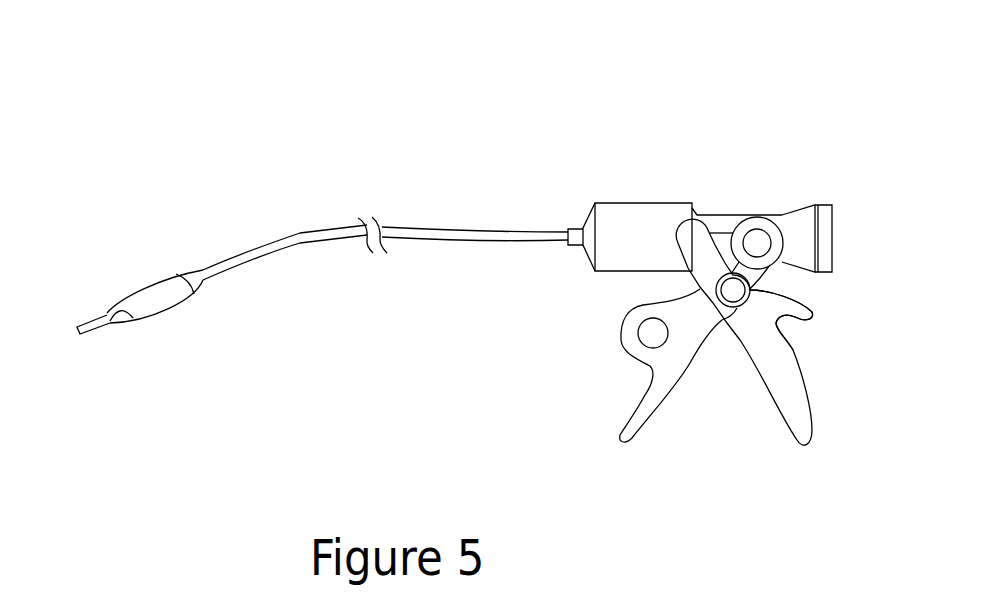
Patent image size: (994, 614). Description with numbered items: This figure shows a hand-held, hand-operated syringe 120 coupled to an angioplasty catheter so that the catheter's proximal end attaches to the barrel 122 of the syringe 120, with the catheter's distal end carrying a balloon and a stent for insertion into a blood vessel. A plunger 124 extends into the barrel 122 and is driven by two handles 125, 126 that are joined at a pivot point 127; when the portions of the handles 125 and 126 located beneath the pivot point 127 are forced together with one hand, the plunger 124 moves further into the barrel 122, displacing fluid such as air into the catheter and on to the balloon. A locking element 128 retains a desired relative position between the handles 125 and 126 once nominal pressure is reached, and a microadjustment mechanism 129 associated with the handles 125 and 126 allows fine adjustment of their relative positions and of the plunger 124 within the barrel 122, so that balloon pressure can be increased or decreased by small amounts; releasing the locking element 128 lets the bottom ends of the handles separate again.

The syringe 120 is at (722, 185).
The barrel 122 is at (625, 202).
The plunger 124 is at (745, 218).
The handle 125 is at (640, 417).
The handle 126 is at (798, 408).
The pivot point 127 is at (773, 320).
The locking element 128 is at (727, 312).
The microadjustment mechanism 129 is at (810, 235).